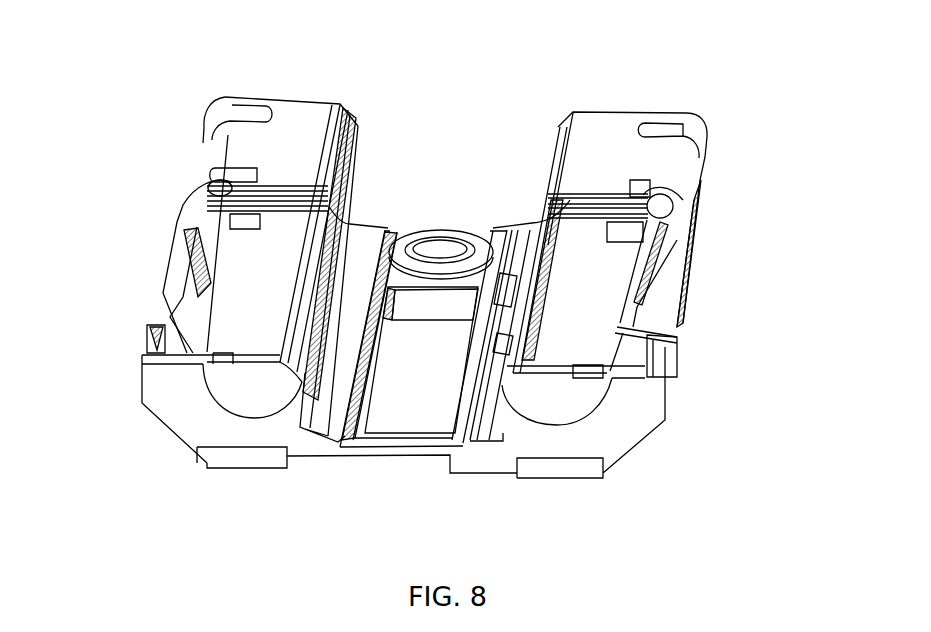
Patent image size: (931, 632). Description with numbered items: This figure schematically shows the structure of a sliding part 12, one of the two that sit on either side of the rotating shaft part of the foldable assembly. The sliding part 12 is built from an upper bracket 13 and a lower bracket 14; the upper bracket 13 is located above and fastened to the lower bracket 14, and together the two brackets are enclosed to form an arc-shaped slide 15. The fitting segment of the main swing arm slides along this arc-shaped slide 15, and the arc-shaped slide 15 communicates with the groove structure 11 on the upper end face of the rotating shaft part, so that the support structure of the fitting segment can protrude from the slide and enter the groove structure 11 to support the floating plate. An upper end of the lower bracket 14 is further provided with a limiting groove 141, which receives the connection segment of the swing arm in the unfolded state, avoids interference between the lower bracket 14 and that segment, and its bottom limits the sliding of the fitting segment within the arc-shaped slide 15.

The groove structure 11 is at (460, 113).
The sliding part 12 is at (150, 128).
The upper bracket 13 is at (270, 397).
The lower bracket 14 is at (192, 430).
The limiting groove 141 is at (170, 322).
The arc-shaped slide 15 is at (203, 260).